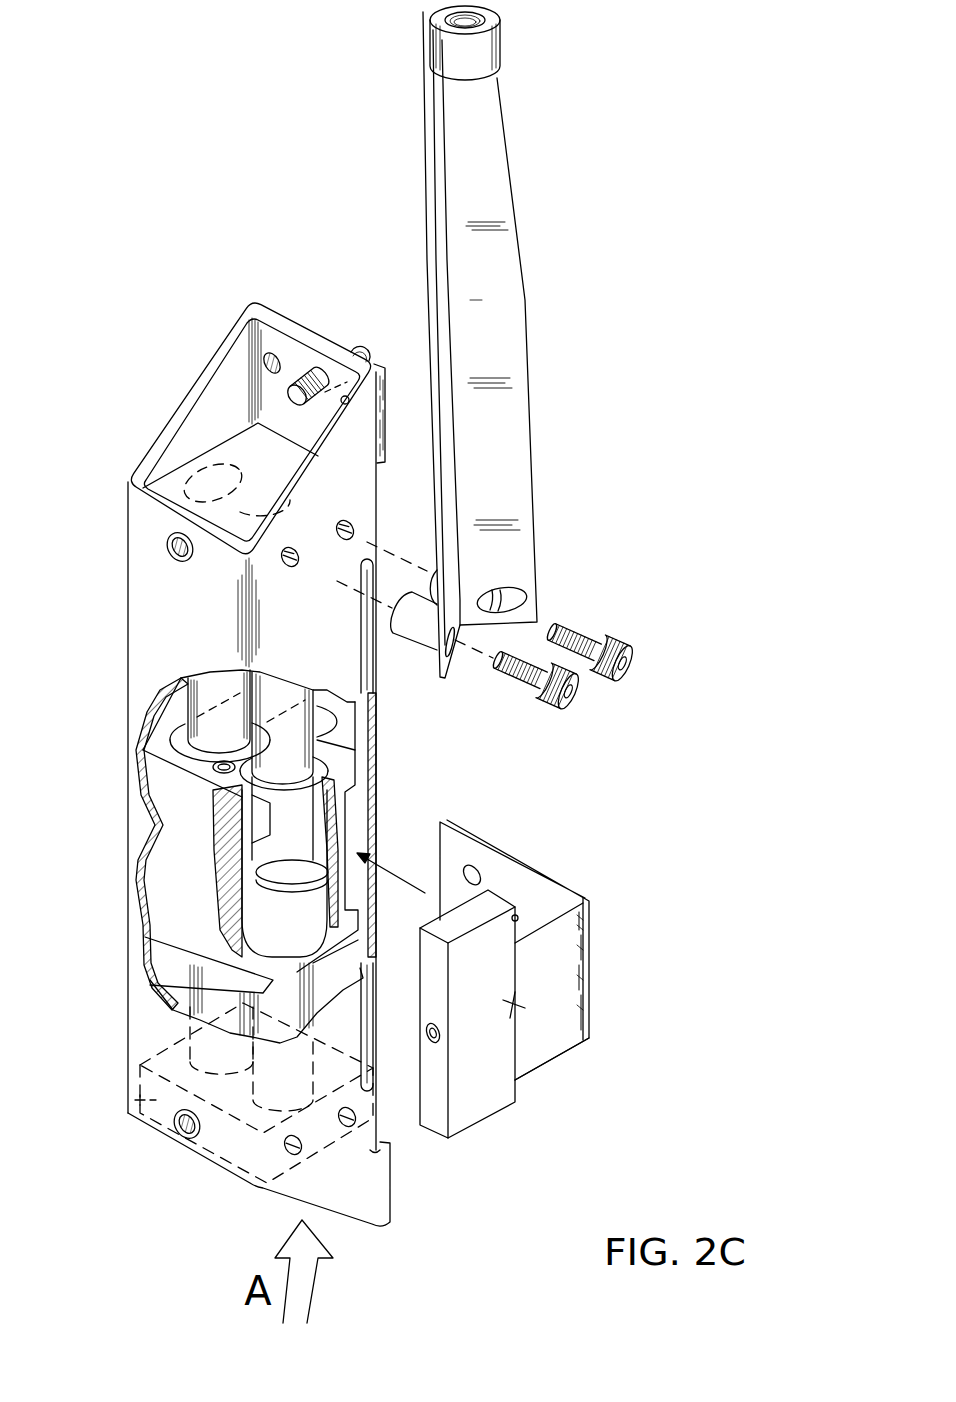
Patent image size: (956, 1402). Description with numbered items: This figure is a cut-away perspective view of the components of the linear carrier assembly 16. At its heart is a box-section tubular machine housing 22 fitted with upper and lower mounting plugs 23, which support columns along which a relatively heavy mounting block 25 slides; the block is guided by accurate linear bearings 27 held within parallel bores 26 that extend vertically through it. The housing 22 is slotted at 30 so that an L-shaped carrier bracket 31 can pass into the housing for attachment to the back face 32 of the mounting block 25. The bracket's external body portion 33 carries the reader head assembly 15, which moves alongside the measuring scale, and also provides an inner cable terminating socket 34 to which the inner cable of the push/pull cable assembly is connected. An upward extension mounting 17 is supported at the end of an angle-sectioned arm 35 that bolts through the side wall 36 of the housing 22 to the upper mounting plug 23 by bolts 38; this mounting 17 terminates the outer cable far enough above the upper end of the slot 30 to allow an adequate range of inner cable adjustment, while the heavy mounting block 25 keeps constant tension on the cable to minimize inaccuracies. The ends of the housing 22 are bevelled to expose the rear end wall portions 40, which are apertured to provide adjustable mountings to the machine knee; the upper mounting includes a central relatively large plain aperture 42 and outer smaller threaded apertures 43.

The reader head assembly 15 is at (470, 1112).
The linear carrier assembly 16 is at (505, 342).
The upward extension mounting 17 is at (448, 53).
The machine housing 22 is at (142, 1005).
The mounting plug 23 is at (236, 452).
The mounting block 25 is at (176, 922).
The bore 26 is at (243, 823).
The linear bearing 27 is at (307, 813).
The slot 30 is at (364, 1074).
The carrier bracket 31 is at (503, 880).
The back face 32 is at (262, 690).
The external body portion 33 is at (535, 1053).
The inner cable terminating socket 34 is at (517, 918).
The angle-sectioned arm 35 is at (512, 408).
The side wall 36 is at (342, 493).
The bolt 38 is at (634, 663).
The rear end wall portion 40 is at (285, 348).
The plain aperture 42 is at (315, 376).
The threaded aperture 43 is at (270, 366).